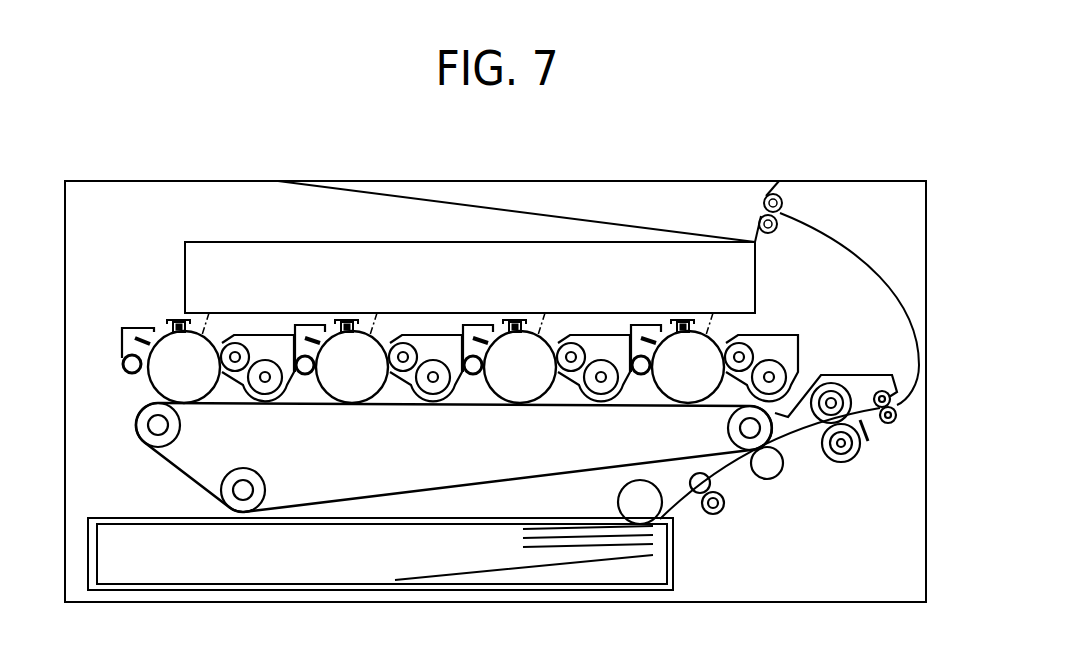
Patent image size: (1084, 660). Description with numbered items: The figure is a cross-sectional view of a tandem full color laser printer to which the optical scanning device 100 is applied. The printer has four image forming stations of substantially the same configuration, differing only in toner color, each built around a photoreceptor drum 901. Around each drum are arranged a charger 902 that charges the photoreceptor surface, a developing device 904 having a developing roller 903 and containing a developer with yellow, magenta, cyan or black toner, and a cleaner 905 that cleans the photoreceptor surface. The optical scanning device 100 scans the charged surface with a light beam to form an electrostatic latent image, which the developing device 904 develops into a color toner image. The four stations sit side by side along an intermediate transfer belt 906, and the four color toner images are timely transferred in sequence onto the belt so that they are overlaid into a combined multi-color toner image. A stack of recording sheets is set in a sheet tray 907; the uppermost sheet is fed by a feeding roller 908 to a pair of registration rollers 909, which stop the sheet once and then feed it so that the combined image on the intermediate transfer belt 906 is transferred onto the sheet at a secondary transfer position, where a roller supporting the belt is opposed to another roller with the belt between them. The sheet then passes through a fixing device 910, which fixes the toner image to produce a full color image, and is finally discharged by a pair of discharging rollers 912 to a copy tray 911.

The optical scanning device 100 is at (268, 250).
The photoreceptor drum 901 is at (158, 380).
The charger 902 is at (173, 318).
The developing roller 903 is at (227, 343).
The developing device 904 is at (275, 343).
The cleaner 905 is at (128, 330).
The intermediate transfer belt 906 is at (173, 468).
The sheet tray 907 is at (172, 572).
The feeding roller 908 is at (618, 503).
The pair of registration rollers 909 is at (723, 507).
The fixing device 910 is at (842, 448).
The copy tray 911 is at (683, 186).
The pair of discharging rollers 912 is at (779, 181).